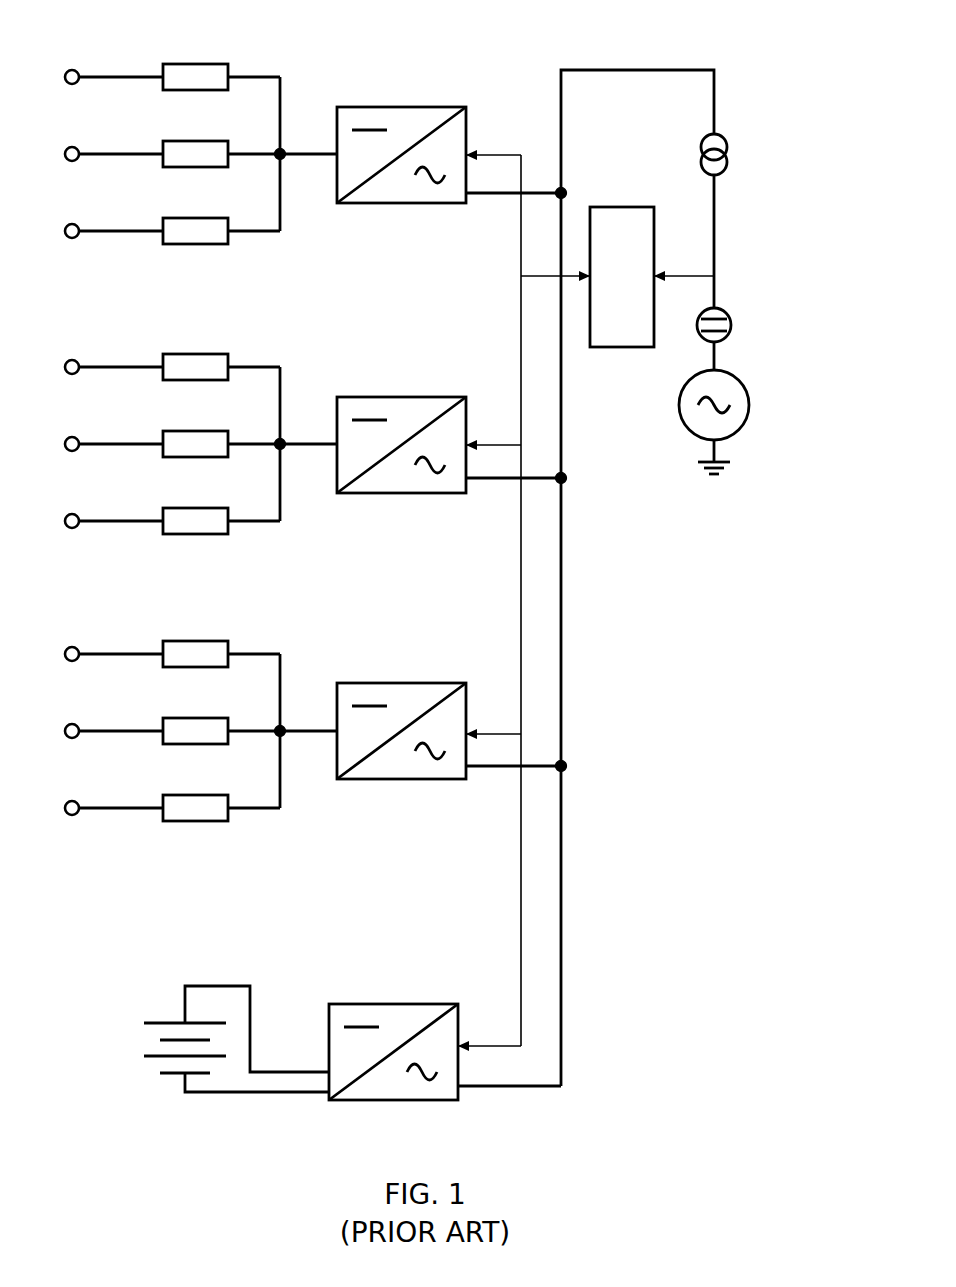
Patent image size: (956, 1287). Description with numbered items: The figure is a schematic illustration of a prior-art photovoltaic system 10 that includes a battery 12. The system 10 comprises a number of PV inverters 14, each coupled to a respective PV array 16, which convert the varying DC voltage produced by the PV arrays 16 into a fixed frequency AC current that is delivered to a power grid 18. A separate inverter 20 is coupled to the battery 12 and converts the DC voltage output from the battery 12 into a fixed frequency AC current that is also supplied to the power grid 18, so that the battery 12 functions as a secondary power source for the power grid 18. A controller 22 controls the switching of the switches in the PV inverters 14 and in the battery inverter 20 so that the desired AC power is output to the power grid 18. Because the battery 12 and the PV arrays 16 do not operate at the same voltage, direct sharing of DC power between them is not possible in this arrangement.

The photovoltaic system 10 is at (800, 80).
The battery 12 is at (160, 1023).
The PV inverter 14 is at (360, 107).
The PV array 16 is at (118, 60).
The power grid 18 is at (735, 376).
The inverter 20 is at (356, 1004).
The controller 22 is at (619, 347).